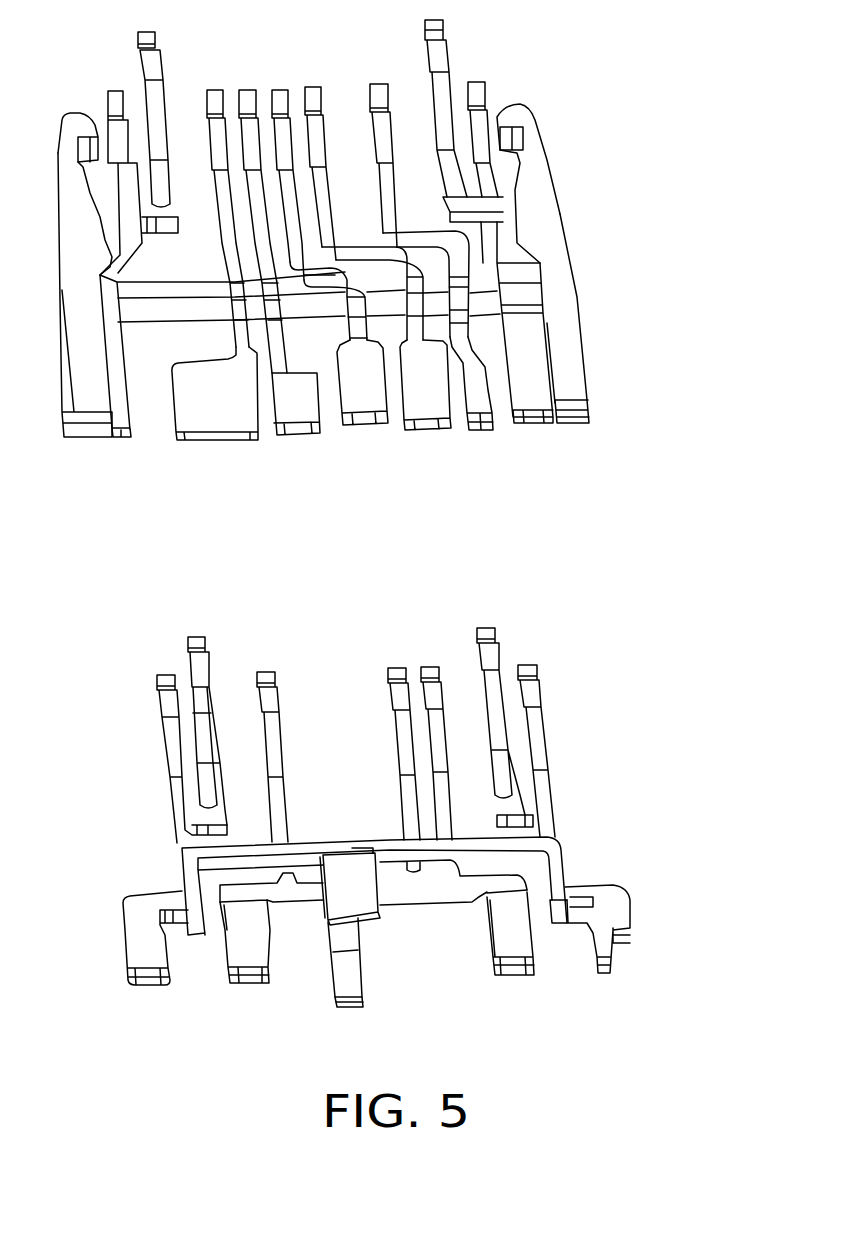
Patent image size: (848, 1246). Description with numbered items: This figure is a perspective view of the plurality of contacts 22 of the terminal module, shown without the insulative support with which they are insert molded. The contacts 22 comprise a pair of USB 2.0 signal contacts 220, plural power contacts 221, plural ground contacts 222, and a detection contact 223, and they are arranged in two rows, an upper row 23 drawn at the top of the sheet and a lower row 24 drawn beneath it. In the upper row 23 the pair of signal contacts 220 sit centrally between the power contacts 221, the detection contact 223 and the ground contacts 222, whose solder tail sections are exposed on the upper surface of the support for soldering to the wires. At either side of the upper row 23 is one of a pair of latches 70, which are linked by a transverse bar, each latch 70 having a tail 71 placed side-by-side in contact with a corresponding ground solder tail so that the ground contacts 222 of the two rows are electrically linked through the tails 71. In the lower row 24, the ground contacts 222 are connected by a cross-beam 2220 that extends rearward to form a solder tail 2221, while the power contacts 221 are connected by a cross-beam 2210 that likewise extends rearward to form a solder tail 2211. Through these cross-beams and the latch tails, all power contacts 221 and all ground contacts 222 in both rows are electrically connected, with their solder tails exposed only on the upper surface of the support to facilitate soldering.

The contacts 22 is at (670, 57).
The upper row 23 is at (597, 263).
The lower row 24 is at (588, 759).
The latch 70 is at (566, 230).
The tail 71 is at (567, 377).
The USB 2.0 signal contacts 220 is at (367, 397).
The power contacts 221 is at (213, 410).
The ground contacts 222 is at (123, 440).
The detection contact 223 is at (298, 400).
The cross-beam 2210 is at (420, 885).
The solder tail 2211 is at (353, 983).
The cross-beam 2220 is at (322, 847).
The solder tail 2221 is at (340, 900).